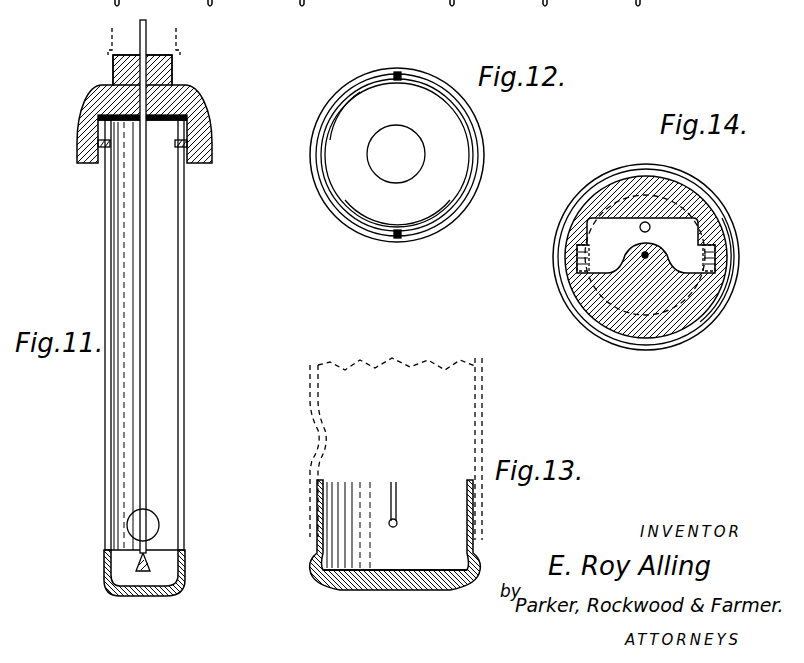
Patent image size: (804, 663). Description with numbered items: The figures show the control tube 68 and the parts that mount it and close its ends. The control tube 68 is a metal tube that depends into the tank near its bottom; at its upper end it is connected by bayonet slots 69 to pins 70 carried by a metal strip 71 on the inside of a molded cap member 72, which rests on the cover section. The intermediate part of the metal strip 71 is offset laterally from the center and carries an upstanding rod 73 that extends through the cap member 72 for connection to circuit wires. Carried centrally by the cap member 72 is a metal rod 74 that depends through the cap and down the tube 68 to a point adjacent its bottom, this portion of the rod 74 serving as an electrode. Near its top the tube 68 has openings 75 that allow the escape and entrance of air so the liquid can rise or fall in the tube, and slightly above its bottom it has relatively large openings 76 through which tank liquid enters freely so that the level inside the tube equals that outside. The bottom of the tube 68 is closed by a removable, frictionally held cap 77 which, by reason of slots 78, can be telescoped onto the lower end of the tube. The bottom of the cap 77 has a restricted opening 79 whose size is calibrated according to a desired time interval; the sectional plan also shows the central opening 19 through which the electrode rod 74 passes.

In FIG. 11, the control tube 68 is at (183, 350).
In FIG. 12, the control tube 68 is at (354, 233).
In FIG. 14, the control tube 68 is at (570, 305).
In FIG. 13, the control tube 68 is at (483, 418).
In FIG. 11, the bayonet slots 69 is at (110, 143).
In FIG. 11, the pins 70 is at (98, 143).
In FIG. 14, the pins 70 is at (574, 258).
In FIG. 11, the metal strip 71 is at (116, 95).
In FIG. 14, the metal strip 71 is at (640, 227).
In FIG. 11, the cap member 72 is at (192, 93).
In FIG. 14, the cap member 72 is at (692, 320).
In FIG. 14, the upstanding rod 73 is at (648, 222).
In FIG. 11, the metal rod 74 is at (146, 257).
In FIG. 14, the metal rod 74 is at (646, 258).
In FIG. 11, the openings 75 is at (107, 190).
In FIG. 11, the openings 76 is at (152, 517).
In FIG. 12, the openings 76 is at (313, 183).
In FIG. 13, the openings 76 is at (318, 430).
In FIG. 11, the cap 77 is at (186, 586).
In FIG. 12, the cap 77 is at (343, 100).
In FIG. 13, the cap 77 is at (326, 578).
In FIG. 12, the slots 78 is at (397, 80).
In FIG. 13, the slots 78 is at (399, 502).
In FIG. 11, the restricted opening 79 is at (143, 597).
In FIG. 13, the restricted opening 79 is at (390, 591).
In FIG. 12, the central opening 19 is at (396, 154).